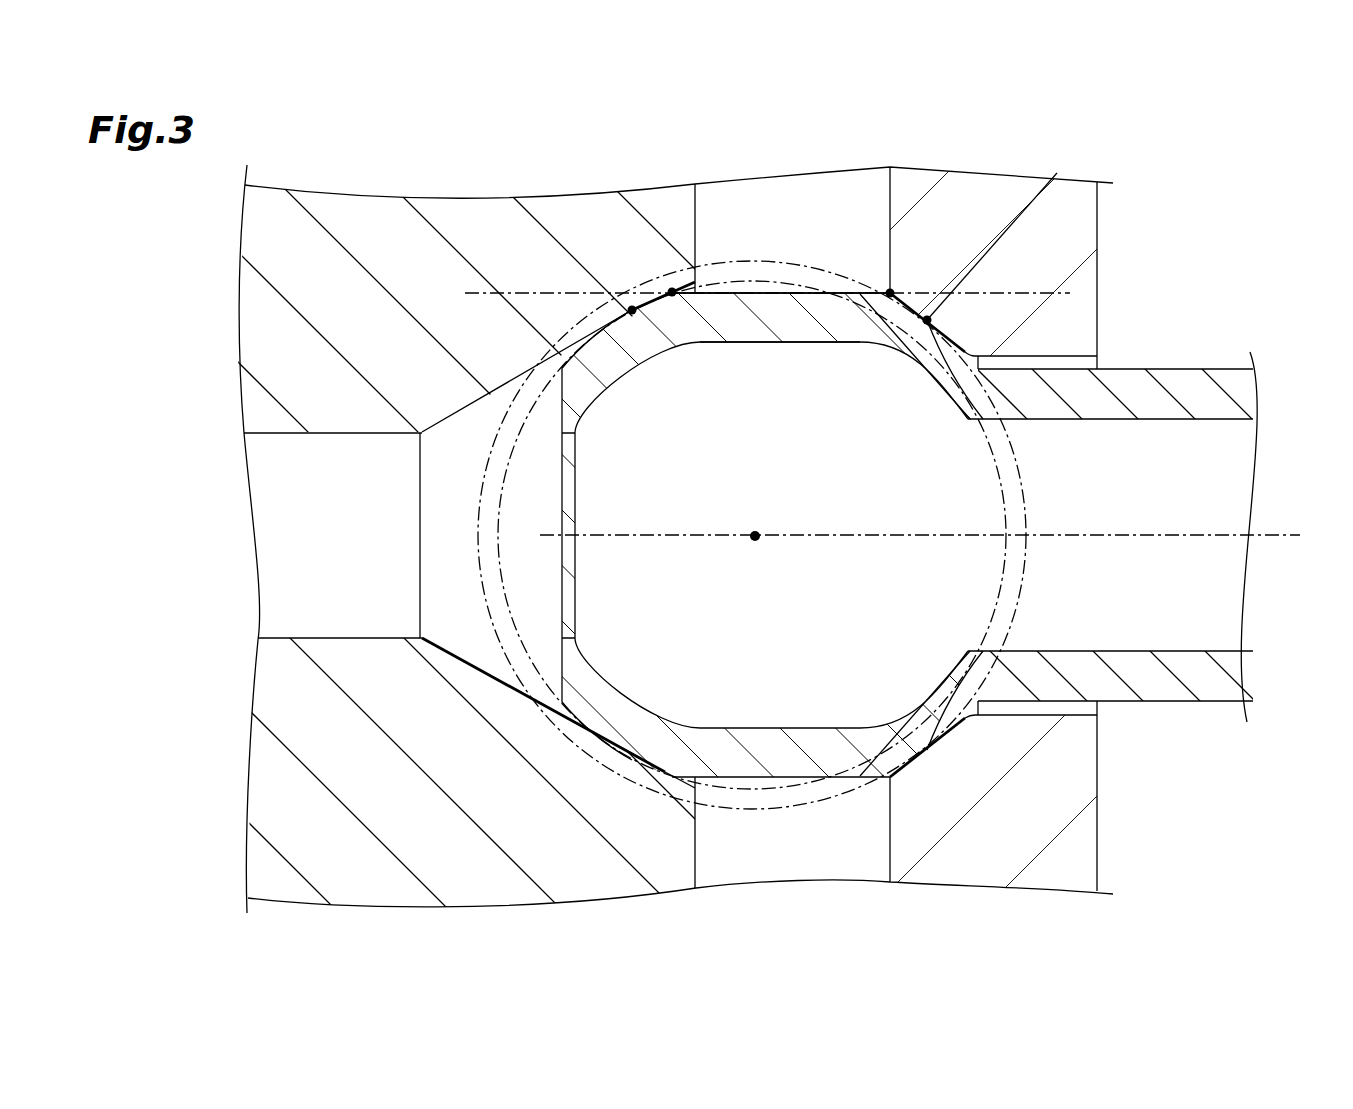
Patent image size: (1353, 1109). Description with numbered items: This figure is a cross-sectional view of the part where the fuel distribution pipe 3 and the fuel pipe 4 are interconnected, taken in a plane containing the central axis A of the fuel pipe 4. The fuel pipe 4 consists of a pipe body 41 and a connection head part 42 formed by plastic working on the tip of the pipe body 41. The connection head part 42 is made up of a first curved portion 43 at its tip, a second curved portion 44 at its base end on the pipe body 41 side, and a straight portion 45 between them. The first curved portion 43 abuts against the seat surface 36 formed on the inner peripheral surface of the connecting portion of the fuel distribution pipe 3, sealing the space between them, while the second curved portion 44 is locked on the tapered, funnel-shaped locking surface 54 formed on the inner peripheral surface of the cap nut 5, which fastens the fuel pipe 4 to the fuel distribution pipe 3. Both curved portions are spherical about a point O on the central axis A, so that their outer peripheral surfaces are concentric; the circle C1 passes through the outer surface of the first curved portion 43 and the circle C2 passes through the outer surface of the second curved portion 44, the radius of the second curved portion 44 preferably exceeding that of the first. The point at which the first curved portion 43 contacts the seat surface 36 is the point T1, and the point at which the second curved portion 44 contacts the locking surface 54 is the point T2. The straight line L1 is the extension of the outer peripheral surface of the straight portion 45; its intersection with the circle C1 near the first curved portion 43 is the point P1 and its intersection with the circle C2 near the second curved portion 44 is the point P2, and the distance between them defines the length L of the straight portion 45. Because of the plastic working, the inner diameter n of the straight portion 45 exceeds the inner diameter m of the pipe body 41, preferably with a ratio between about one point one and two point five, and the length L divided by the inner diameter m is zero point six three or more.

The fuel distribution pipe 3 is at (698, 878).
The fuel pipe 4 is at (1207, 369).
The cap nut 5 is at (1100, 235).
The seat surface 36 is at (455, 430).
The pipe body 41 is at (1157, 705).
The connection head part 42 is at (748, 790).
The first curved portion 43 is at (612, 370).
The second curved portion 44 is at (930, 380).
The straight portion 45 is at (797, 325).
The locking surface 54 is at (975, 370).
The length of the straight portion L is at (890, 167).
The straight line L1 is at (1057, 173).
The point P1 is at (671, 288).
The point P2 is at (891, 290).
The point T1 is at (628, 309).
The point T2 is at (932, 320).
The circle C1 is at (490, 590).
The circle C2 is at (470, 522).
The point O is at (755, 530).
The central axis A is at (1278, 530).
The inner diameter of the pipe body m is at (1115, 419).
The inner diameter of the straight portion n is at (713, 342).